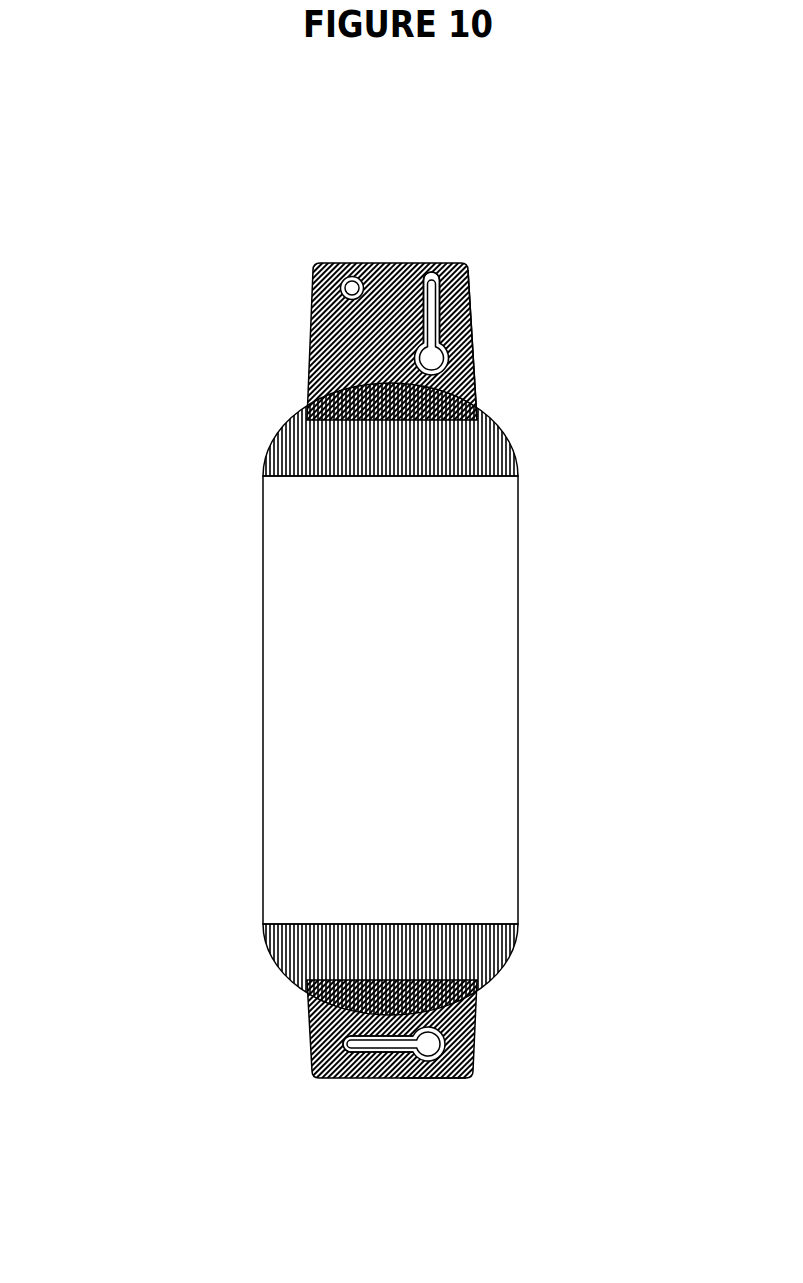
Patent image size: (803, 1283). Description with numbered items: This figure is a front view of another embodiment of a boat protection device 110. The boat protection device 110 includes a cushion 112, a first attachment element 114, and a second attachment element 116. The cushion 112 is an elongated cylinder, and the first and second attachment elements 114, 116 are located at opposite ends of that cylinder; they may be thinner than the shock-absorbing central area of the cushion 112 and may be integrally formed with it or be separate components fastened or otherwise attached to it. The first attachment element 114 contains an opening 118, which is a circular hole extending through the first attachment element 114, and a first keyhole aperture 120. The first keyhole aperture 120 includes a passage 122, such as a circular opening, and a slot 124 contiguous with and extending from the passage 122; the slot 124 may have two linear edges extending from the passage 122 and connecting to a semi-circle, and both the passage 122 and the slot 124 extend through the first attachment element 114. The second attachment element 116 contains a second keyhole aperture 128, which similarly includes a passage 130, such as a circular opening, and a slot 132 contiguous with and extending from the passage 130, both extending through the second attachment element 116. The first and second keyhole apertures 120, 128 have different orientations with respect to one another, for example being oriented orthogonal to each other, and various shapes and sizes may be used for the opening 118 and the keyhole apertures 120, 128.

The boat protection device 110 is at (122, 210).
The cushion 112 is at (470, 627).
The first attachment element 114 is at (322, 350).
The second attachment element 116 is at (318, 1012).
The opening 118 is at (348, 278).
The first keyhole aperture 120 is at (445, 266).
The passage 122 is at (428, 358).
The slot 124 is at (470, 300).
The second keyhole aperture 128 is at (440, 1076).
The passage 130 is at (428, 1043).
The slot 132 is at (378, 1046).